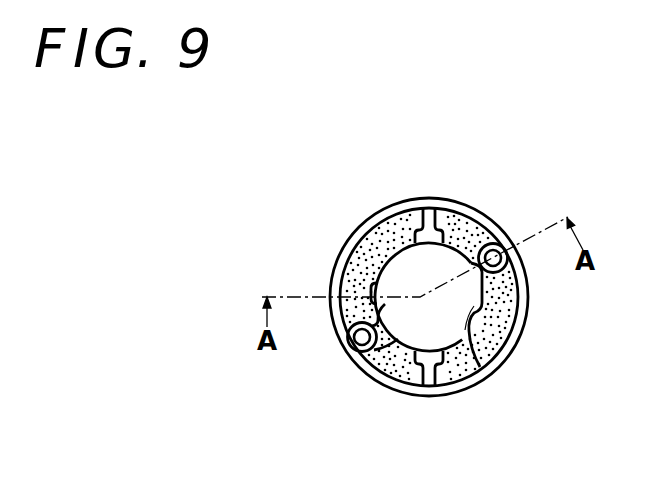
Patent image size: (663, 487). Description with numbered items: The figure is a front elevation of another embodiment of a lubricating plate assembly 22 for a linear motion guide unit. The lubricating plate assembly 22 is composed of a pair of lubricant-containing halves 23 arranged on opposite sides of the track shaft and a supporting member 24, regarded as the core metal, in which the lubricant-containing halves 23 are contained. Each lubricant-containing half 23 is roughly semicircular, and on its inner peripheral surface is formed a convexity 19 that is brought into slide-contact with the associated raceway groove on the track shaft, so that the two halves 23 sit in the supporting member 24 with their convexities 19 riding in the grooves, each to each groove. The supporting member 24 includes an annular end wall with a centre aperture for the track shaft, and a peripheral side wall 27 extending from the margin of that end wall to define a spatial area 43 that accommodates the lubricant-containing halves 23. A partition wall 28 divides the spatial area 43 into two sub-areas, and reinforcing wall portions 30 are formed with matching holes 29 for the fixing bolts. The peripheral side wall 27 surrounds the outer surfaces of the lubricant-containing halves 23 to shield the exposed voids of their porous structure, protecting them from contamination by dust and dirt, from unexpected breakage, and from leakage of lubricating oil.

The lubricating plate assembly 22 is at (455, 197).
The supporting member 24 is at (472, 210).
The peripheral side wall 27 is at (364, 230).
The convexity 19 is at (395, 362).
The partition wall 28 is at (423, 220).
The matching hole 29 is at (498, 250).
The reinforcing wall portion 30 is at (510, 258).
The lubricant-containing half 23 is at (497, 332).
The spatial area 43 is at (360, 265).